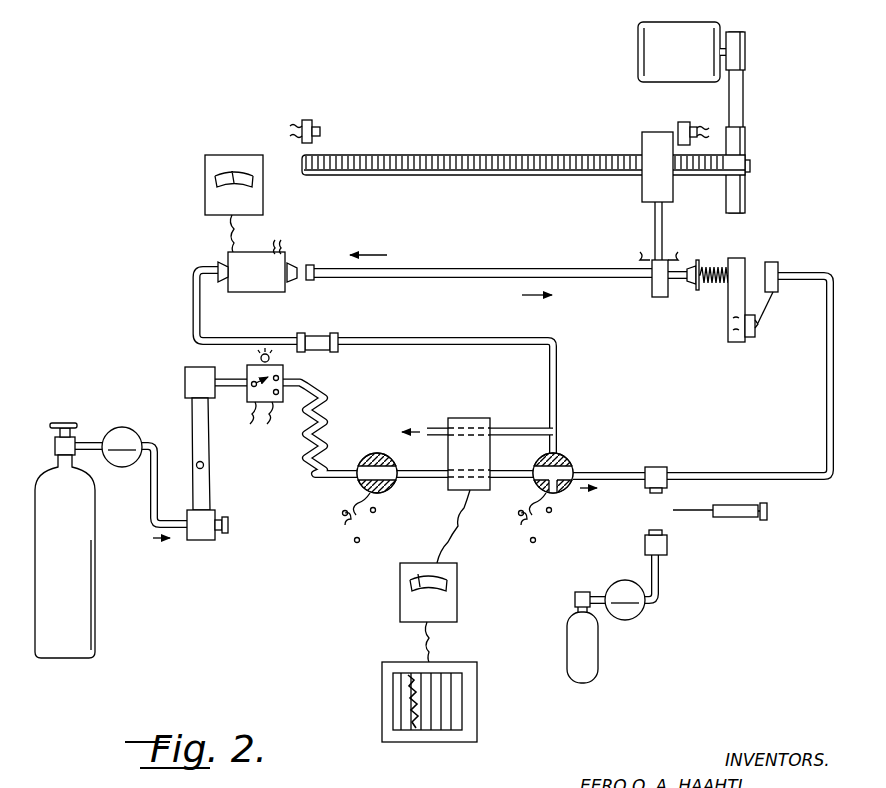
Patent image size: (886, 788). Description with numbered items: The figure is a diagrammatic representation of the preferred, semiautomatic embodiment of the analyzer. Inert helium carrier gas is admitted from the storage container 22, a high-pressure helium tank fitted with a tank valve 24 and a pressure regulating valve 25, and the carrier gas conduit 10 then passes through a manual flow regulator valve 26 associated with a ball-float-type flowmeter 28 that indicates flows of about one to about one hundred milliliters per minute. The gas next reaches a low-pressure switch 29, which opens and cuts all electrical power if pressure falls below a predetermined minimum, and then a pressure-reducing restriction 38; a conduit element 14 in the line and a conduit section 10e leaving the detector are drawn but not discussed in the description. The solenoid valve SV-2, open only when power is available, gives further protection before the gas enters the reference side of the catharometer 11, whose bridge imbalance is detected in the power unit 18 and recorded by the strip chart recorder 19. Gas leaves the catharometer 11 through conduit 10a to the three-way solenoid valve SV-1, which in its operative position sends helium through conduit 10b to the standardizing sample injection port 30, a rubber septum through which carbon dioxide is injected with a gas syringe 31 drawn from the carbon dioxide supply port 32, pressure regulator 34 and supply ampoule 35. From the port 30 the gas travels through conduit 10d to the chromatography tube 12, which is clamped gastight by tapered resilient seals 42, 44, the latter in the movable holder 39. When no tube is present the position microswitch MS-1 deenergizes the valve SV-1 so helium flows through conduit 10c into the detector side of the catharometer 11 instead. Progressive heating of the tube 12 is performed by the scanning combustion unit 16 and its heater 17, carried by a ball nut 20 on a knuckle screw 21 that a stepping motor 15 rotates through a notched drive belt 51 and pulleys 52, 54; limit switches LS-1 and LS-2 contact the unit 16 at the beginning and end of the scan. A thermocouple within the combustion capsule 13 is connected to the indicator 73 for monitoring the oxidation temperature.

The carrier gas conduit 10 is at (150, 505).
The conduit 10a is at (512, 480).
The conduit 10b is at (625, 483).
The conduit 10c is at (525, 428).
The conduit 10d is at (825, 452).
The conduit outlet section 10e is at (440, 420).
The catharometer 11 is at (478, 420).
The chromatography tube 12 is at (573, 263).
The combustion capsule 13 is at (228, 262).
The conduit fitting 14 is at (318, 335).
The stepping motor 15 is at (638, 52).
The scanning combustion unit 16 is at (636, 191).
The heater 17 is at (655, 297).
The power unit 18 is at (400, 603).
The strip chart recorder 19 is at (382, 685).
The ball nut 20 is at (642, 145).
The knuckle screw 21 is at (447, 155).
The storage container 22 is at (82, 635).
The tank valve 24 is at (58, 437).
The pressure regulating valve 25 is at (122, 427).
The manual flow regulator valve 26 is at (205, 540).
The flowmeter 28 is at (210, 490).
The low-pressure switch 29 is at (255, 405).
The standardizing sample injection port 30 is at (652, 467).
The gas syringe 31 is at (730, 517).
The carbon dioxide supply port 32 is at (667, 545).
The pressure regulator 34 is at (645, 603).
The carbon dioxide supply ampoule 35 is at (598, 650).
The pressure-reducing restriction 38 is at (325, 407).
The movable holder 39 is at (755, 256).
The tapered resilient seal 42 is at (313, 265).
The tapered resilient seal 44 is at (696, 285).
The notched drive belt 51 is at (742, 95).
The pulley 52 is at (745, 45).
The pulley 54 is at (745, 150).
The indicator 73 is at (205, 186).
The limit switch LS-1 is at (305, 116).
The limit switch LS-2 is at (690, 127).
The position microswitch MS-1 is at (750, 337).
The three-way solenoid valve SV-1 is at (553, 498).
The solenoid valve SV-2 is at (375, 498).